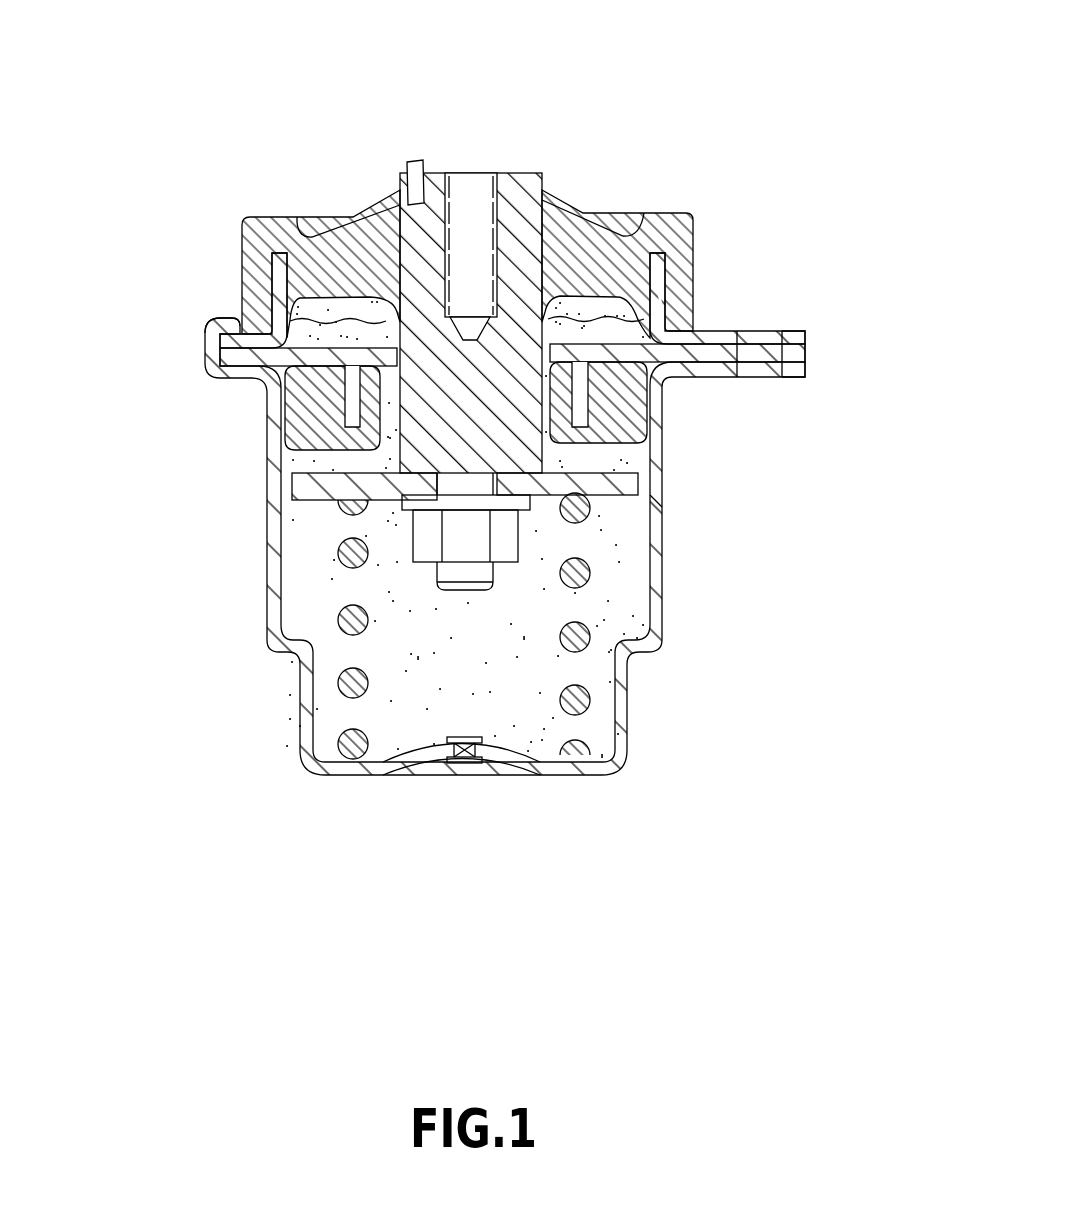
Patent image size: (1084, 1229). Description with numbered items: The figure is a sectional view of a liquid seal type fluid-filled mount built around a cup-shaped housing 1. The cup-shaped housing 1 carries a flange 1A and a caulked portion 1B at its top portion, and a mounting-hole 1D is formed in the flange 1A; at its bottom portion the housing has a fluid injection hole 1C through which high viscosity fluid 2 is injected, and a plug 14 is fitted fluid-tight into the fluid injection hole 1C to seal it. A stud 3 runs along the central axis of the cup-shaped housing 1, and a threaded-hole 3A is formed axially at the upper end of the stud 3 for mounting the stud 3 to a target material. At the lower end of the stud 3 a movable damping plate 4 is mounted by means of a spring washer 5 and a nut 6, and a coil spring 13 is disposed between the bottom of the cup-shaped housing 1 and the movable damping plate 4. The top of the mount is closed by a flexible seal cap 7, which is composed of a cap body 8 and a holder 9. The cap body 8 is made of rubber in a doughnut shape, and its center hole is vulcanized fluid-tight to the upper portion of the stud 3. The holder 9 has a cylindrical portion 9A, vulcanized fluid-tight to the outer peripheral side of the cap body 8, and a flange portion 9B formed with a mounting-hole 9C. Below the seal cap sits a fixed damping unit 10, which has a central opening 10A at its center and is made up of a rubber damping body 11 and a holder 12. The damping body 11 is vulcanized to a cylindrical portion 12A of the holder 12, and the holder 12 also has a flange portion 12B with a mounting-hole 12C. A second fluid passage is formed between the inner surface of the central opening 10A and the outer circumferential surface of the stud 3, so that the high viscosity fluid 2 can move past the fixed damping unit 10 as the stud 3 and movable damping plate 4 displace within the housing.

The cup-shaped housing 1 is at (663, 610).
The flange 1A is at (727, 380).
The caulked portion 1B is at (207, 342).
The fluid injection hole 1C is at (430, 772).
The mounting-hole 1D is at (757, 372).
The high viscosity fluid 2 is at (530, 720).
The stud 3 is at (522, 173).
The threaded-hole 3A is at (470, 198).
The movable damping plate 4 is at (303, 488).
The spring washer 5 is at (403, 502).
The nut 6 is at (420, 543).
The flexible seal cap 7 is at (607, 195).
The cap body 8 is at (357, 233).
The holder 9 is at (675, 212).
The cylindrical portion 9A is at (668, 256).
The flange portion 9B is at (715, 335).
The mounting-hole 9C is at (770, 327).
The fixed damping unit 10 is at (247, 402).
The central opening 10A is at (270, 213).
The damping body 11 is at (303, 450).
The holder 12 is at (668, 427).
The cylindrical portion 12A is at (668, 505).
The flange portion 12B is at (233, 382).
The mounting-hole 12C is at (782, 380).
The coil spring 13 is at (588, 648).
The plug 14 is at (463, 765).